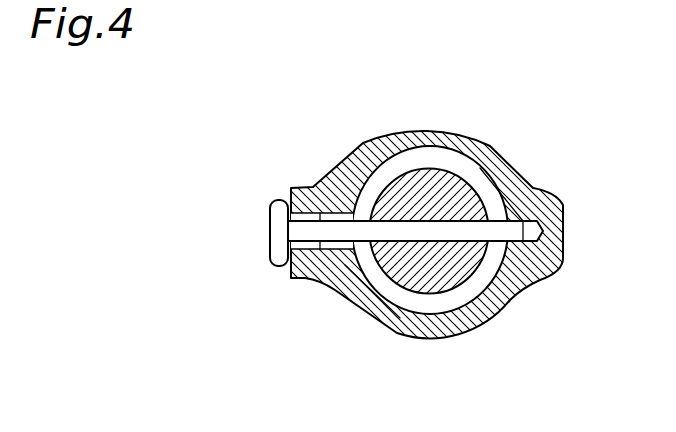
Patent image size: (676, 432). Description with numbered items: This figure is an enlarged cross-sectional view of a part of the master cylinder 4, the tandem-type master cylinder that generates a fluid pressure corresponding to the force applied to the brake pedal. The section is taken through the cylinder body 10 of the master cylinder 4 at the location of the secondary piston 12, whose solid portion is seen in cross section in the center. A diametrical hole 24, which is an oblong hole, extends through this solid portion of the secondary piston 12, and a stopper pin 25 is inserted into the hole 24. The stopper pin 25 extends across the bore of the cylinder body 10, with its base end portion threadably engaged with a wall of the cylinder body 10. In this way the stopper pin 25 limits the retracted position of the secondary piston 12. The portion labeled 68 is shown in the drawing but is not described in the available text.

The master cylinder 4 is at (499, 318).
The cylinder body 10 is at (426, 326).
The secondary piston 12 is at (404, 167).
The diametrical hole 24 is at (352, 200).
The stopper pin 25 is at (455, 232).
The flange portion 68 is at (382, 287).